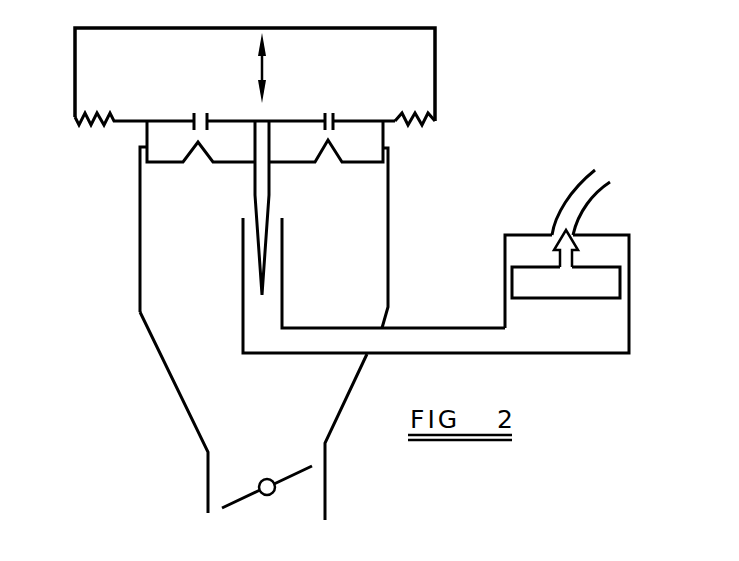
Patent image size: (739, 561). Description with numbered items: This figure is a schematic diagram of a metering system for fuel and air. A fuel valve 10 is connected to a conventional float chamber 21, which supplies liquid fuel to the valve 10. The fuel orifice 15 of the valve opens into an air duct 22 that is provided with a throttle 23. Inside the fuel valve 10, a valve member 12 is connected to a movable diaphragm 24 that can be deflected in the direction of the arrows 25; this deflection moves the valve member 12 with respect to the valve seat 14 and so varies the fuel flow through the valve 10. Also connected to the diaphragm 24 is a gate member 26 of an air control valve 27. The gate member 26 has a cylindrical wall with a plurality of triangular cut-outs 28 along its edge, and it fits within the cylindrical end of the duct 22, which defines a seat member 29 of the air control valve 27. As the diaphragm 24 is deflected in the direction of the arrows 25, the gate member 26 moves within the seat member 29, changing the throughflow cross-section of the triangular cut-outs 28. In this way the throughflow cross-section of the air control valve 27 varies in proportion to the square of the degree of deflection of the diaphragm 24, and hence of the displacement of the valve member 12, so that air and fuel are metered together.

The fuel valve 10 is at (226, 268).
The valve member 12 is at (270, 183).
The valve seat 14 is at (283, 258).
The fuel orifice 15 is at (243, 218).
The float chamber 21 is at (630, 298).
The air duct 22 is at (140, 290).
The throttle 23 is at (300, 472).
The movable diaphragm 24 is at (357, 119).
The arrows 25 is at (258, 70).
The gate member 26 is at (147, 135).
The air control valve 27 is at (398, 166).
The triangular cut-outs 28 is at (322, 160).
The seat member 29 is at (140, 170).